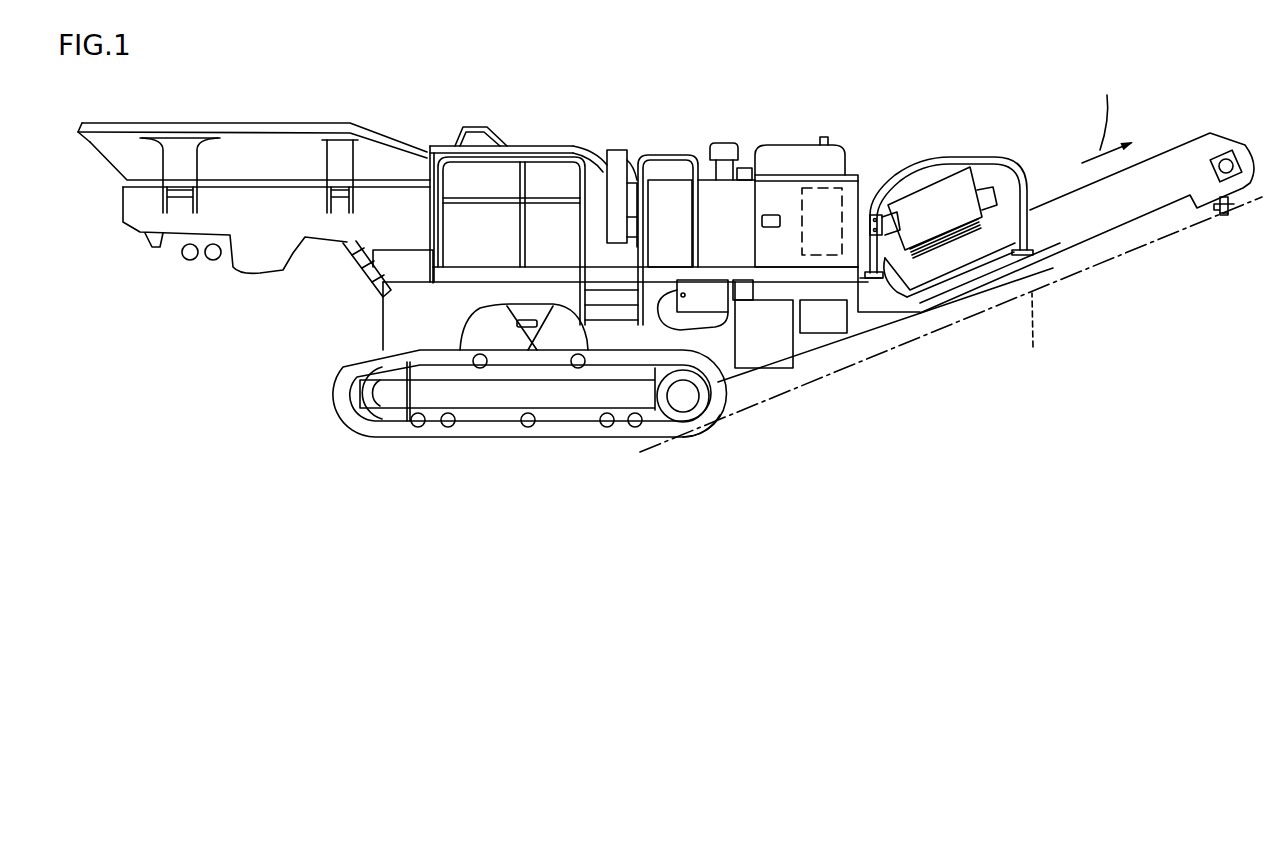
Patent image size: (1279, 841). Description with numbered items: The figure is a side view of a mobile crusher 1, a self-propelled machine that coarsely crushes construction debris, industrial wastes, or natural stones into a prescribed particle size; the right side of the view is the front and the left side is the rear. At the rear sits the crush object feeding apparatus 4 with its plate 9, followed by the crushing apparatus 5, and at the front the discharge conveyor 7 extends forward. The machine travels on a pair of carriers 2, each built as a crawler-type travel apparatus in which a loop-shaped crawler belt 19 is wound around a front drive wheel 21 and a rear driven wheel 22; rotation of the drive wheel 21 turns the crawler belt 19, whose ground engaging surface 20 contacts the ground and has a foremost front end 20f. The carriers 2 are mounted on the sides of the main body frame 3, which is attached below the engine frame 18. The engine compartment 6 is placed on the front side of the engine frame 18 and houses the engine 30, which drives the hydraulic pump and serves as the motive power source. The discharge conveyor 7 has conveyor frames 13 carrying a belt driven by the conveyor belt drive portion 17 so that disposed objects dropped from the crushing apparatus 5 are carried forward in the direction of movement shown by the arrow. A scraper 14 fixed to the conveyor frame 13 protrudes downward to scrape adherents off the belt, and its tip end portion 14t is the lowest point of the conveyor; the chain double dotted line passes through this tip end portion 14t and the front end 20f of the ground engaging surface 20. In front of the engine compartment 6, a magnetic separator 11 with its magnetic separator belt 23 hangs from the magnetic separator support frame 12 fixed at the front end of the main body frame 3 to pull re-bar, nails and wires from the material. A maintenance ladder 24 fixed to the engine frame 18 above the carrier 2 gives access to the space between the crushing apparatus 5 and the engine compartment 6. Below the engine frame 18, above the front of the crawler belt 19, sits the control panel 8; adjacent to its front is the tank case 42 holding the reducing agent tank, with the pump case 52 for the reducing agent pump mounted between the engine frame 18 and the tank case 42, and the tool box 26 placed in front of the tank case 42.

The mobile crusher 1 is at (1038, 98).
The carrier 2 is at (409, 445).
The main body frame 3 is at (714, 338).
The crush object feeding apparatus 4 is at (208, 122).
The crushing apparatus 5 is at (435, 147).
The engine compartment 6 is at (786, 146).
The discharge conveyor 7 is at (1074, 252).
The control panel 8 is at (678, 366).
The hopper plate 9 is at (305, 122).
The magnetic separator 11 is at (922, 195).
The magnetic separator support frame 12 is at (963, 157).
The conveyor frame 13 is at (1170, 167).
The scraper 14 is at (1233, 205).
The tip end portion 14t is at (1223, 217).
The conveyor belt drive portion 17 is at (1227, 153).
The engine frame 18 is at (845, 300).
The crawler belt 19 is at (342, 387).
The ground engaging surface 20 is at (493, 438).
The front end 20f is at (696, 438).
The drive wheel 21 is at (683, 398).
The driven wheel 22 is at (353, 393).
The magnetic separator belt 23 is at (947, 250).
The maintenance ladder 24 is at (600, 332).
The tool box 26 is at (823, 322).
The engine 30 is at (838, 174).
The tank case 42 is at (763, 352).
The pump case 52 is at (745, 292).